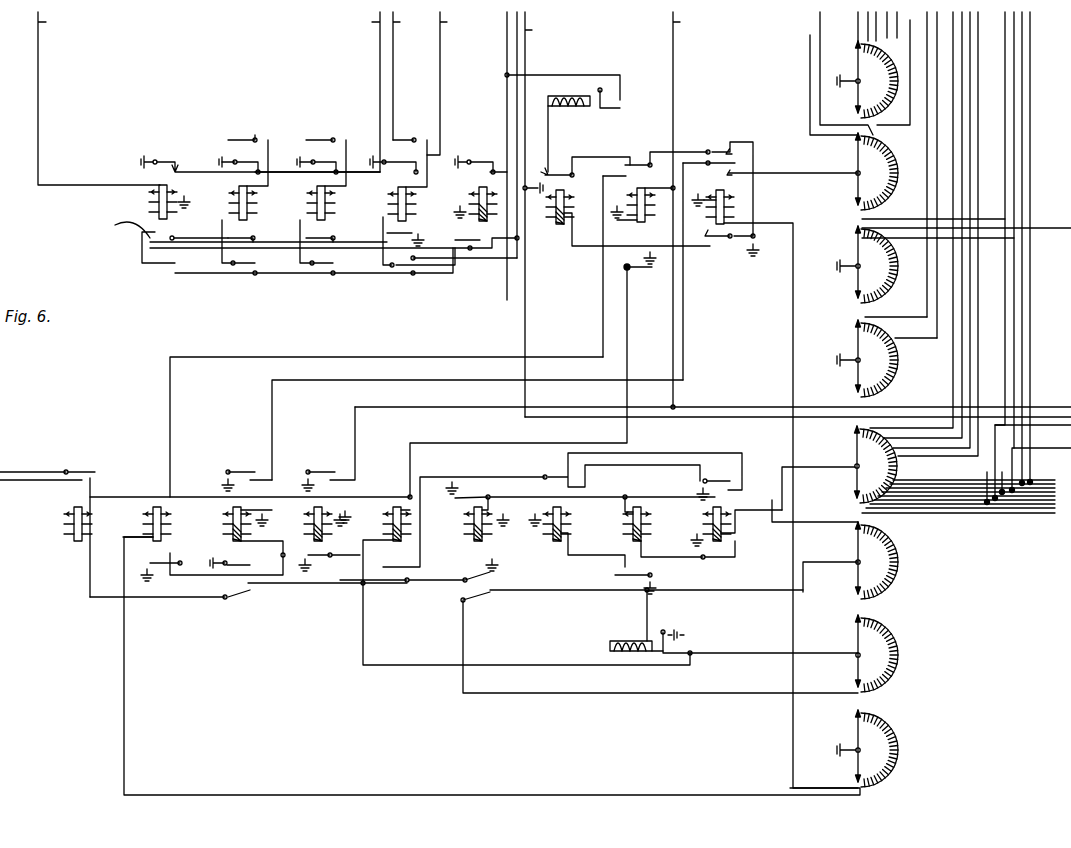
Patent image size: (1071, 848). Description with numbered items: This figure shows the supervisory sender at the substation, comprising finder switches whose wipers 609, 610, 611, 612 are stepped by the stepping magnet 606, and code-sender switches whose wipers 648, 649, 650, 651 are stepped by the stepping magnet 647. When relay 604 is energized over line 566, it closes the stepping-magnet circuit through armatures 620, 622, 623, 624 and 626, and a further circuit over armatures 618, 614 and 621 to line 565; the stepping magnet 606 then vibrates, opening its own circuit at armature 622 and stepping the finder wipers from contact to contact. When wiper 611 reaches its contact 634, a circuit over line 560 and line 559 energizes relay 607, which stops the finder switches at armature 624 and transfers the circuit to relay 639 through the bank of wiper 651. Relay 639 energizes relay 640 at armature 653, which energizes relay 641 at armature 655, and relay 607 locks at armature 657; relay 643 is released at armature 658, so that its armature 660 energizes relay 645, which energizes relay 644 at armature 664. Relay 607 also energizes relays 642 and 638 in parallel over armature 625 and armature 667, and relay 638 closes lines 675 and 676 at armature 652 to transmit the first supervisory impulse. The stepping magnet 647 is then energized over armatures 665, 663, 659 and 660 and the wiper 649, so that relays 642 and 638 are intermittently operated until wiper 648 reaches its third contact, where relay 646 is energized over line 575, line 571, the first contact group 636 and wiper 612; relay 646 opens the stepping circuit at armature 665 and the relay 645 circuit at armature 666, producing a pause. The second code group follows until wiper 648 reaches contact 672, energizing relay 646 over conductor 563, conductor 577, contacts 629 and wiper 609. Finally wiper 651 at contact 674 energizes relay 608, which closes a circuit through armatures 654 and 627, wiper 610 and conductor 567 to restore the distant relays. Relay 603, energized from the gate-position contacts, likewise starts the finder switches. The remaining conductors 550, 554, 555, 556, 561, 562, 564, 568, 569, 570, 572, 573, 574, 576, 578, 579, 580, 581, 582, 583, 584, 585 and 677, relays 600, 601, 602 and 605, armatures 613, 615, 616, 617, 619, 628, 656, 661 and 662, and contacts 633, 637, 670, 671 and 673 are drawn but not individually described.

The conductor 550 is at (99, 98).
The conductor 554 is at (361, 92).
The conductor 555 is at (411, 76).
The conductor 556 is at (452, 83).
The line 559 is at (656, 210).
The line 560 is at (1005, 25).
The conductor 561 is at (1014, 42).
The conductor 562 is at (1022, 60).
The conductor 563 is at (1032, 77).
The conductor 564 is at (507, 39).
The line 565 is at (517, 44).
The line 566 is at (546, 214).
The conductor 567 is at (810, 23).
The conductor 568 is at (820, 41).
The conductor 569 is at (904, 23).
The conductor 570 is at (878, 47).
The line 571 is at (927, 111).
The conductor 572 is at (937, 134).
The conductor 573 is at (953, 25).
The conductor 574 is at (962, 42).
The line 575 is at (970, 61).
The conductor 576 is at (985, 87).
The conductor 577 is at (840, 47).
The conductor 578 is at (840, 59).
The conductor 579 is at (840, 23).
The conductor 580 is at (1040, 228).
The conductor 581 is at (1040, 239).
The conductor 582 is at (1040, 407).
The conductor 583 is at (1000, 417).
The conductor 584 is at (1055, 425).
The conductor 585 is at (1055, 456).
The relay 600 is at (150, 202).
The relay 601 is at (239, 205).
The relay 602 is at (313, 204).
The relay 603 is at (388, 204).
The relay 604 is at (470, 204).
The relay 605 is at (566, 209).
The stepping magnet 606 is at (565, 64).
The relay 607 is at (638, 264).
The relay 608 is at (492, 479).
The finder switch wiper 609 is at (856, 92).
The finder switch wiper 610 is at (855, 182).
The finder switch wiper 611 is at (855, 251).
The finder switch wiper 612 is at (855, 347).
The contact 613 is at (165, 167).
The armature 614 is at (282, 242).
The contact 615 is at (158, 267).
The contact 616 is at (412, 149).
The contact 617 is at (383, 161).
The armature 618 is at (410, 241).
The contact 619 is at (413, 274).
The armature 620 is at (486, 164).
The armature 621 is at (485, 244).
The armature 622 is at (612, 99).
The armature 623 is at (552, 171).
The armature 624 is at (637, 157).
The armature 625 is at (636, 267).
The armature 626 is at (722, 147).
The armature 627 is at (742, 162).
The contact 628 is at (729, 247).
The contacts 629 is at (860, 73).
The wiper 633 is at (875, 133).
The contact 634 is at (855, 231).
The first group 636 is at (866, 321).
The contact 637 is at (890, 341).
The relay 638 is at (64, 529).
The relay 639 is at (143, 529).
The relay 640 is at (223, 529).
The relay 641 is at (304, 529).
The relay 642 is at (384, 529).
The relay 643 is at (466, 529).
The relay 644 is at (550, 537).
The relay 645 is at (620, 529).
The relay 646 is at (700, 529).
The stepping magnet 647 is at (618, 639).
The code-sender switch wiper 648 is at (855, 457).
The code-sender switch wiper 649 is at (855, 550).
The code-sender switch wiper 650 is at (855, 635).
The code-sender switch wiper 651 is at (855, 741).
The armature 652 is at (92, 465).
The armature 653 is at (158, 569).
The armature 654 is at (247, 472).
The armature 655 is at (232, 544).
The contact 656 is at (243, 598).
The armature 657 is at (328, 449).
The armature 658 is at (318, 559).
The armature 659 is at (385, 581).
The armature 660 is at (465, 494).
The contact 661 is at (466, 571).
The contact 662 is at (470, 602).
The armature 663 is at (562, 477).
The armature 664 is at (615, 577).
The armature 665 is at (722, 471).
The armature 666 is at (705, 571).
The armature 667 is at (686, 631).
The wiper 670 is at (876, 469).
The contact 671 is at (893, 457).
The contact 672 is at (855, 484).
The contact 673 is at (890, 477).
The contact 674 is at (857, 786).
The line 675 is at (18, 471).
The line 676 is at (25, 481).
The conductor bundle 677 is at (958, 508).